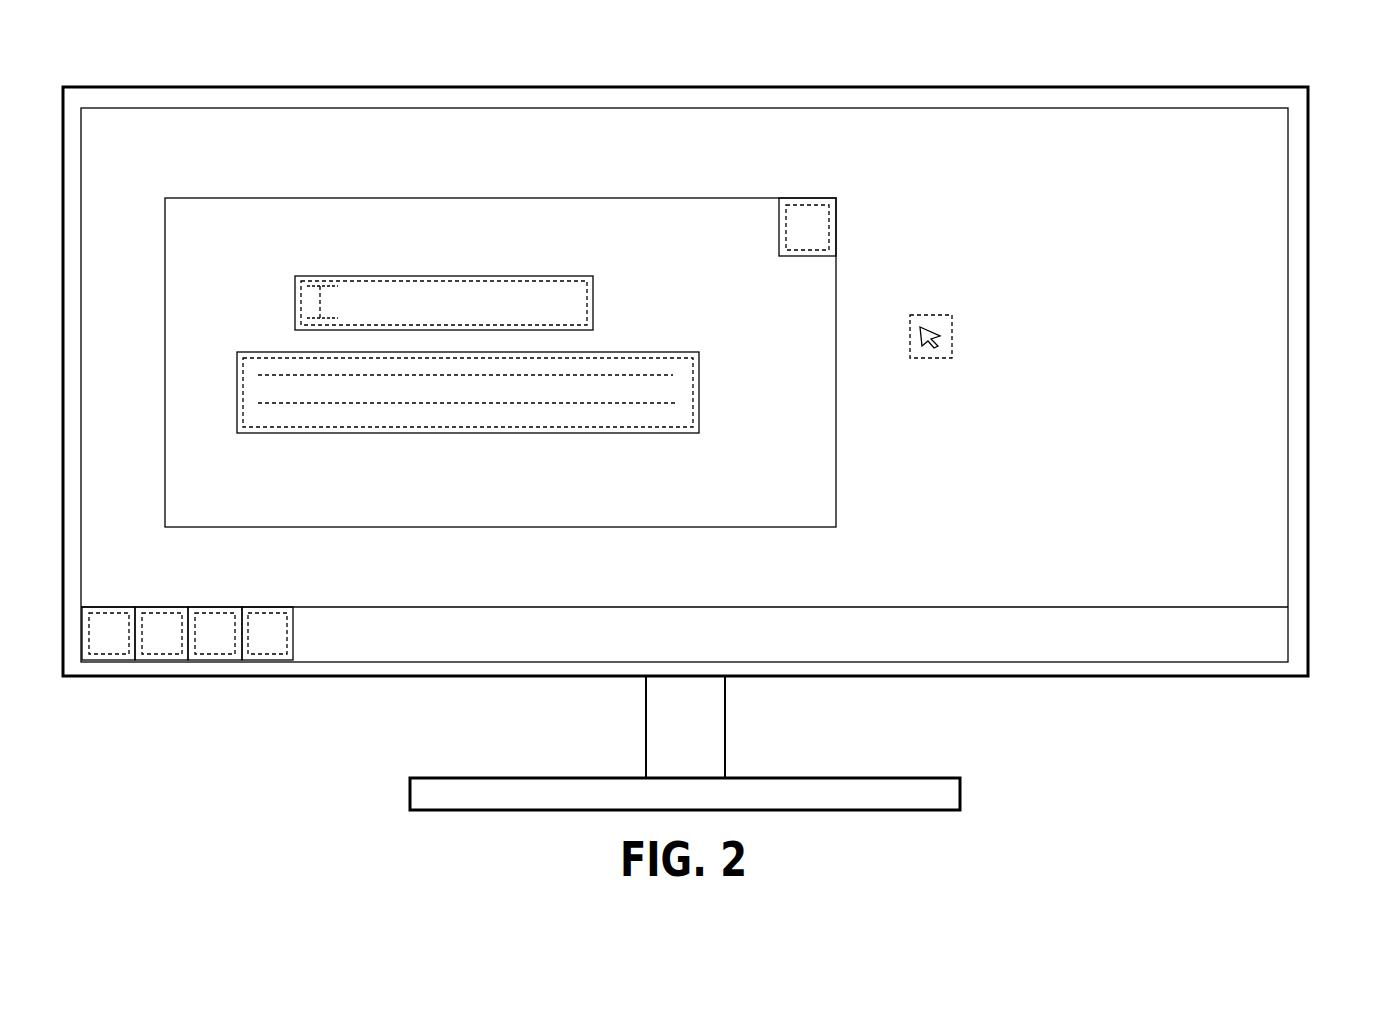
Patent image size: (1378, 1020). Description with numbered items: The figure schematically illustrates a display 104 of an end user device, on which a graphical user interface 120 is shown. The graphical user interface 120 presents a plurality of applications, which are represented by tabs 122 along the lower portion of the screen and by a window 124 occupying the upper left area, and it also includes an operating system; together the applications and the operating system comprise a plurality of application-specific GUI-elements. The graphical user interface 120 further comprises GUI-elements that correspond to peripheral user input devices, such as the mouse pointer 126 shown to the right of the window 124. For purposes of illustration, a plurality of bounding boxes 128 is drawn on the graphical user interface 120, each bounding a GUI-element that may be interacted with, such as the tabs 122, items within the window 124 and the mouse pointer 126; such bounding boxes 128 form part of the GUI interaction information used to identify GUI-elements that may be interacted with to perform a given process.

The display 104 is at (1298, 128).
The graphical user interface 120 is at (1176, 496).
The tabs 122 is at (260, 647).
The windows 124 is at (288, 198).
The mouse pointer 126 is at (948, 343).
The bounding boxes 128 is at (593, 296).